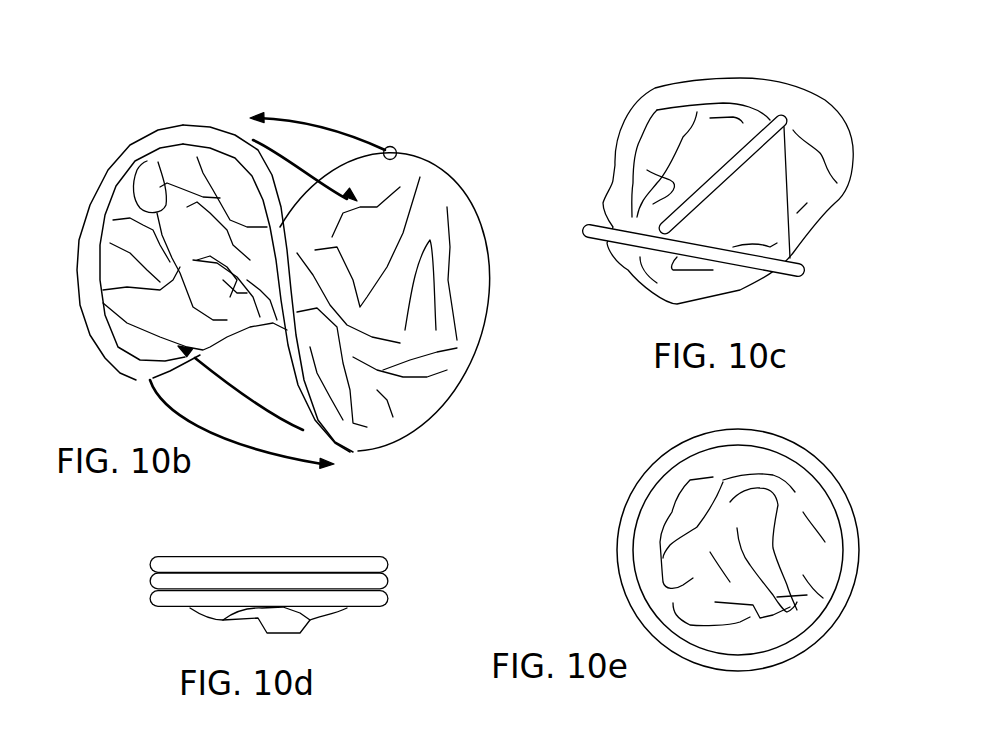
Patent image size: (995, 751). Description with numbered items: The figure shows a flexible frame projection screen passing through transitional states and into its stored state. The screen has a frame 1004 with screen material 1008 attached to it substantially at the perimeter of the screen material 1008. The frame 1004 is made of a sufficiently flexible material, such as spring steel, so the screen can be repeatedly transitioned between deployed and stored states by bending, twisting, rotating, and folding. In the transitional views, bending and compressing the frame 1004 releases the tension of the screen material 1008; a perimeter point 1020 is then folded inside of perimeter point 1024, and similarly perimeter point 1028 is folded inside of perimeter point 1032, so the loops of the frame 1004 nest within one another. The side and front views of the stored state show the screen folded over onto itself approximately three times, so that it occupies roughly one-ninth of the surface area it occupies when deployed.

In FIG. 10d, the frame 1004 is at (383, 563).
In FIG. 10e, the frame 1004 is at (627, 520).
In FIG. 10c, the screen material 1008 is at (657, 152).
In FIG. 10d, the screen material 1008 is at (337, 614).
In FIG. 10e, the screen material 1008 is at (653, 560).
In FIG. 10b, the perimeter point 1020 is at (357, 454).
In FIG. 10c, the perimeter point 1020 is at (679, 231).
In FIG. 10b, the perimeter point 1024 is at (136, 381).
In FIG. 10c, the perimeter point 1024 is at (750, 267).
In FIG. 10b, the perimeter point 1028 is at (217, 127).
In FIG. 10c, the perimeter point 1028 is at (777, 117).
In FIG. 10b, the perimeter point 1032 is at (390, 146).
In FIG. 10c, the perimeter point 1032 is at (733, 85).